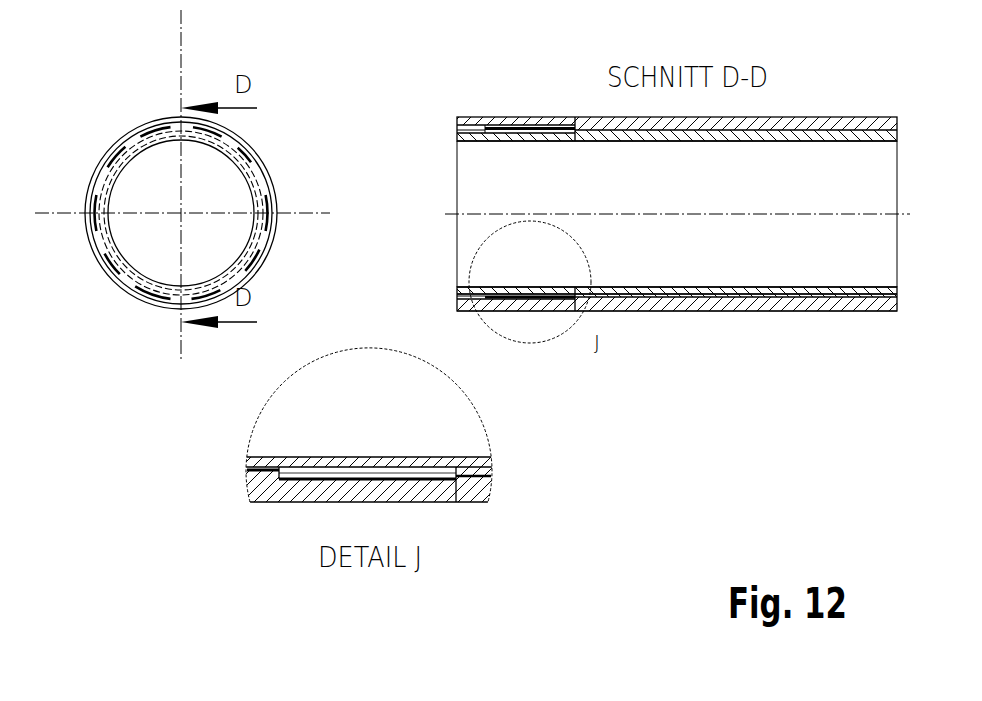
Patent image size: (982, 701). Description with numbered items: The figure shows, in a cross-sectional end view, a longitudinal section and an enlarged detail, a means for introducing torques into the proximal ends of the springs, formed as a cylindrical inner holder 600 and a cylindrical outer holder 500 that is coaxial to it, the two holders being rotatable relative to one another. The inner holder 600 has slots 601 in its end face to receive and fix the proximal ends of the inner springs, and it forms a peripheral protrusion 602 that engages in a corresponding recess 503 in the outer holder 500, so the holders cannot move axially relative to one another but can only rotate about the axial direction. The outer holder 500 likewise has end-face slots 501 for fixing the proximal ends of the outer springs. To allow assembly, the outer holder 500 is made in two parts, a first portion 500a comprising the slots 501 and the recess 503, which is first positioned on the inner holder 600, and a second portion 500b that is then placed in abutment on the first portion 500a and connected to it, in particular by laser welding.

The outer holder 500 is at (233, 135).
The first portion 500a is at (522, 312).
The second portion 500b is at (710, 312).
The end-face slots 501 is at (480, 118).
The recess 503 is at (370, 477).
The inner holder 600 is at (228, 140).
The slots 601 is at (480, 292).
The peripheral protrusion 602 is at (345, 468).